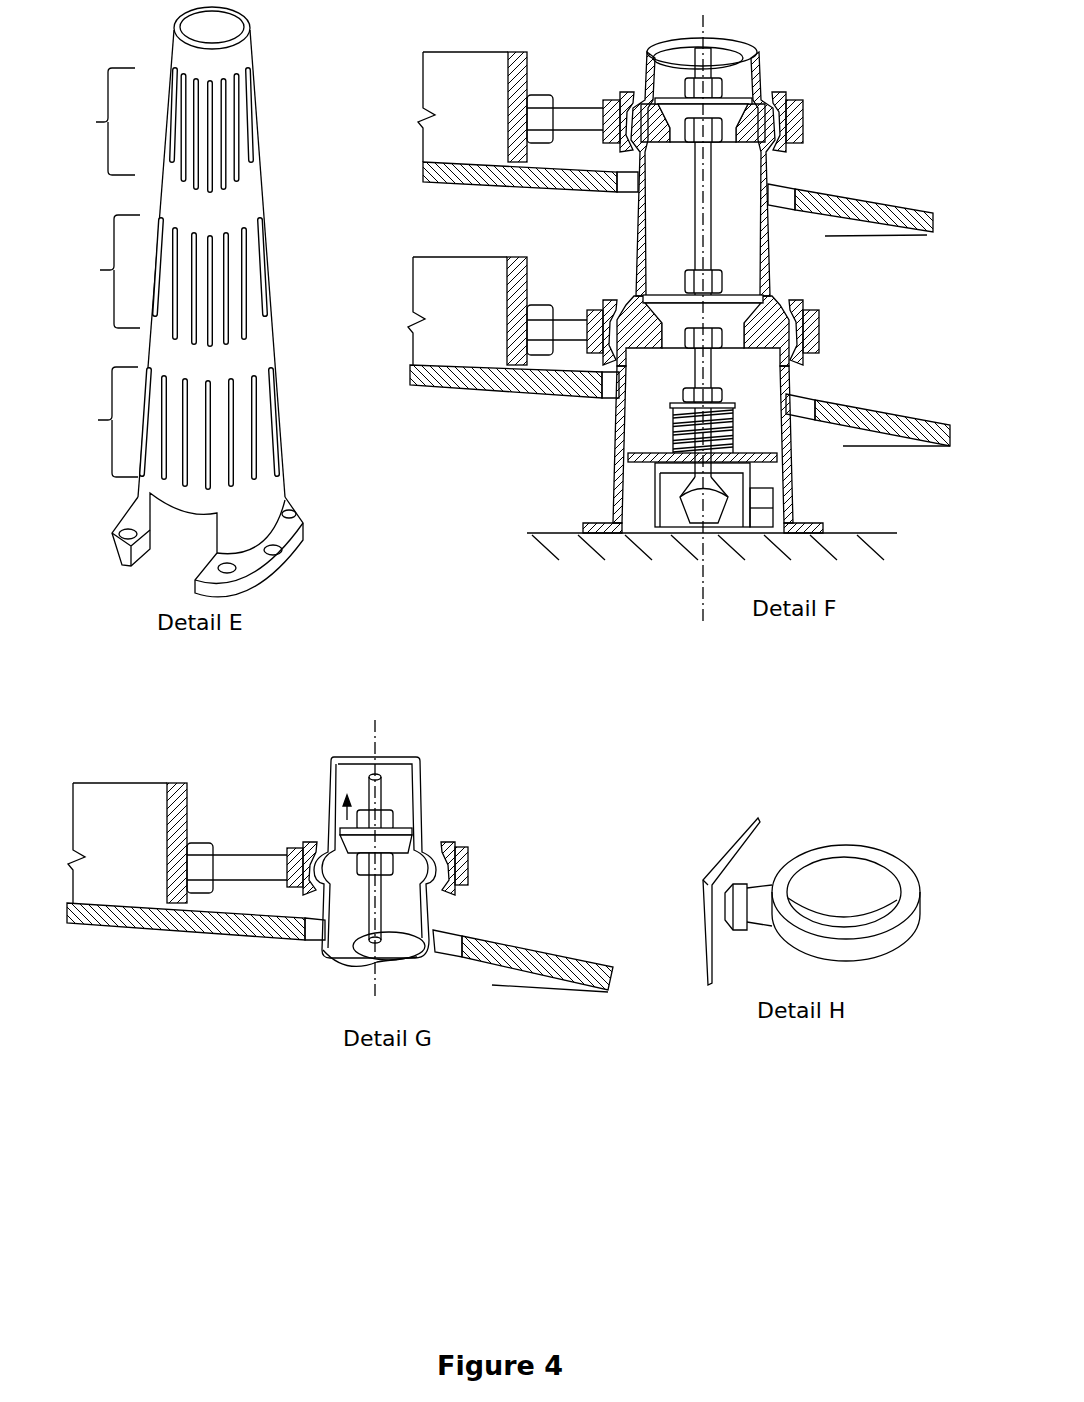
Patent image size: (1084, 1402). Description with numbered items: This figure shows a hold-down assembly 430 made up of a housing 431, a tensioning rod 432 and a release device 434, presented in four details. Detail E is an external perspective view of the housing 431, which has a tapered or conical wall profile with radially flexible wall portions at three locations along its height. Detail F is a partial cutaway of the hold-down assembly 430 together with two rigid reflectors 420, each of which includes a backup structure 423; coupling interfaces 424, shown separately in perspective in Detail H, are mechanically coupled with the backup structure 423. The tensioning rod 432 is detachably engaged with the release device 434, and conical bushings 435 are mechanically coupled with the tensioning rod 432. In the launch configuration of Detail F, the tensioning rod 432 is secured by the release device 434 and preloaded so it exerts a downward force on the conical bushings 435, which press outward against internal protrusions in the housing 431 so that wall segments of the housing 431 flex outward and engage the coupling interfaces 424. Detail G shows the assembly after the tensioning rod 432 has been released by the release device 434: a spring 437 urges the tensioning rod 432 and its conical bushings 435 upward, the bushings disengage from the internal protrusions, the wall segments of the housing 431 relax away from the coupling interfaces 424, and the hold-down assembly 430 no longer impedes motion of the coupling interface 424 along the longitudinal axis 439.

The rigid reflector 420 is at (582, 172).
The backup structure 423 is at (532, 78).
The coupling interface 424 is at (790, 133).
The hold-down assembly 430 is at (150, 35).
The housing 431 is at (248, 188).
The tensioning rod 432 is at (725, 372).
The release device 434 is at (758, 505).
The conical bushing 435 is at (737, 108).
The spring 437 is at (738, 430).
The longitudinal axis 439 is at (703, 596).